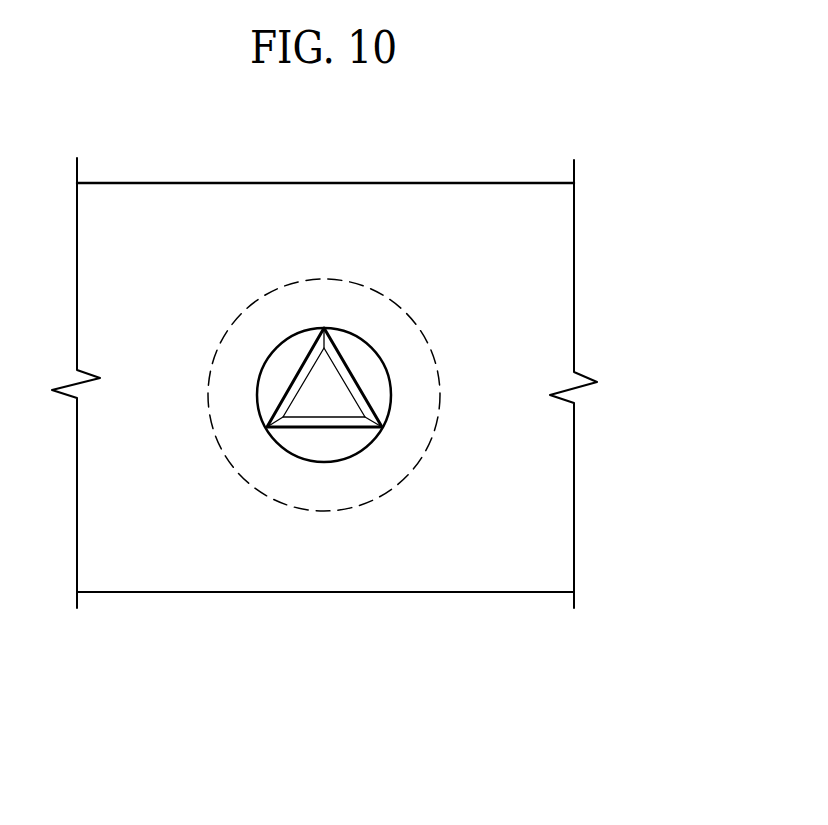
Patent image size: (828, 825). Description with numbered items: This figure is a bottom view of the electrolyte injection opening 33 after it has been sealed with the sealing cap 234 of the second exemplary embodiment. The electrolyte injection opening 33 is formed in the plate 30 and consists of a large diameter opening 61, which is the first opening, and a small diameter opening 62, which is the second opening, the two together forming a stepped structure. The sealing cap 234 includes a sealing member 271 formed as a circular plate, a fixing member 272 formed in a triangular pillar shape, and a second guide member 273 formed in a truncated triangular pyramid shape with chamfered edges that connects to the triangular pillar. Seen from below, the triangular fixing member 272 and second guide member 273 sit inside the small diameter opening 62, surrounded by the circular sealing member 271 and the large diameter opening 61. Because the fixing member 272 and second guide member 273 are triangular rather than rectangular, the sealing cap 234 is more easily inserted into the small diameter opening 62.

The substrate 30 is at (153, 570).
The electrolyte injection opening 33 is at (324, 501).
The large diameter opening 61 is at (258, 491).
The small diameter opening 62 is at (310, 461).
The sealing cap 234 is at (465, 395).
The sealing member 271 is at (428, 448).
The fixing member 272 is at (355, 392).
The second guide member 273 is at (333, 362).